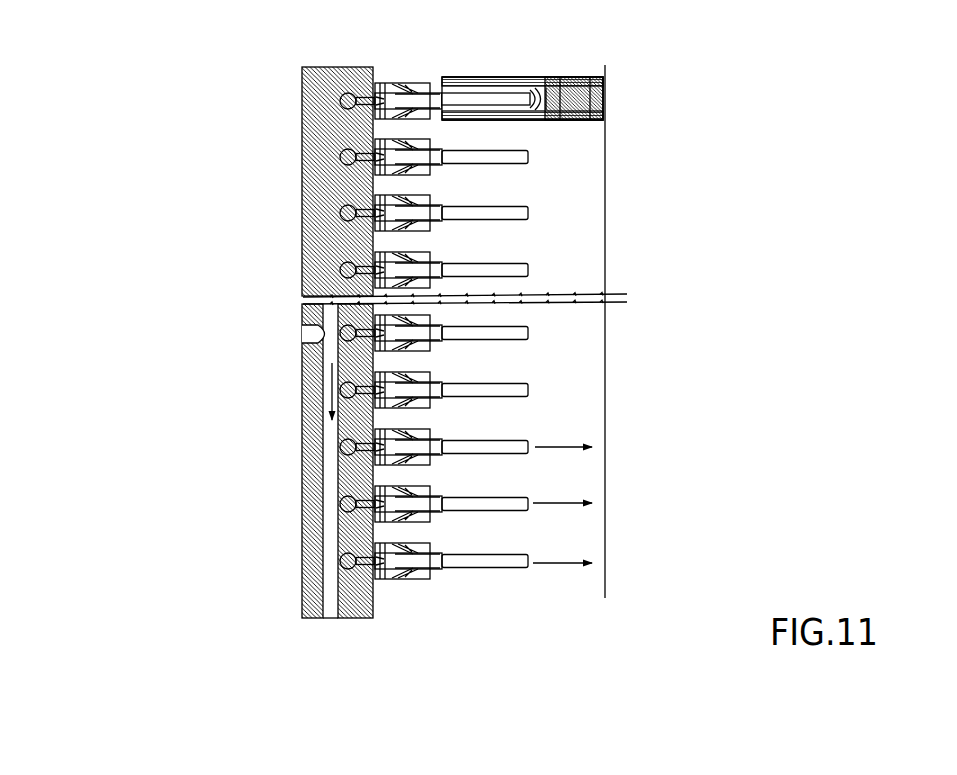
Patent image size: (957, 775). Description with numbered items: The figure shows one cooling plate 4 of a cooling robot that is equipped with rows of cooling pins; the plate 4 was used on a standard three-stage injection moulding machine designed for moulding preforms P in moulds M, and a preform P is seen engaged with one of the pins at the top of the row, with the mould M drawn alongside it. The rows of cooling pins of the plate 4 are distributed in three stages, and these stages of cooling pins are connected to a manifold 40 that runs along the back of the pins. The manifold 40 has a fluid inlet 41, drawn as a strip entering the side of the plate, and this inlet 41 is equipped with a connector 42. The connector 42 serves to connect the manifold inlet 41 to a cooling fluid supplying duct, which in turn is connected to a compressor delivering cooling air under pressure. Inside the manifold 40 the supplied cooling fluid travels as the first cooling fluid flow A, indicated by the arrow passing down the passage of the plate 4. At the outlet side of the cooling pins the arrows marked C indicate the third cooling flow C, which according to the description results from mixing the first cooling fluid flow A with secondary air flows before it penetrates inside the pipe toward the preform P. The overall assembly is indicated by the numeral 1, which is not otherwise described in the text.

The apparatus 1 is at (532, 660).
The cooling plate 4 is at (158, 565).
The manifold 40 is at (328, 465).
The fluid inlet 41 is at (303, 303).
The connector 42 is at (263, 325).
The first cooling fluid flow A is at (334, 382).
The third cooling flow C is at (539, 447).
The preform P is at (563, 77).
The mould M is at (490, 121).